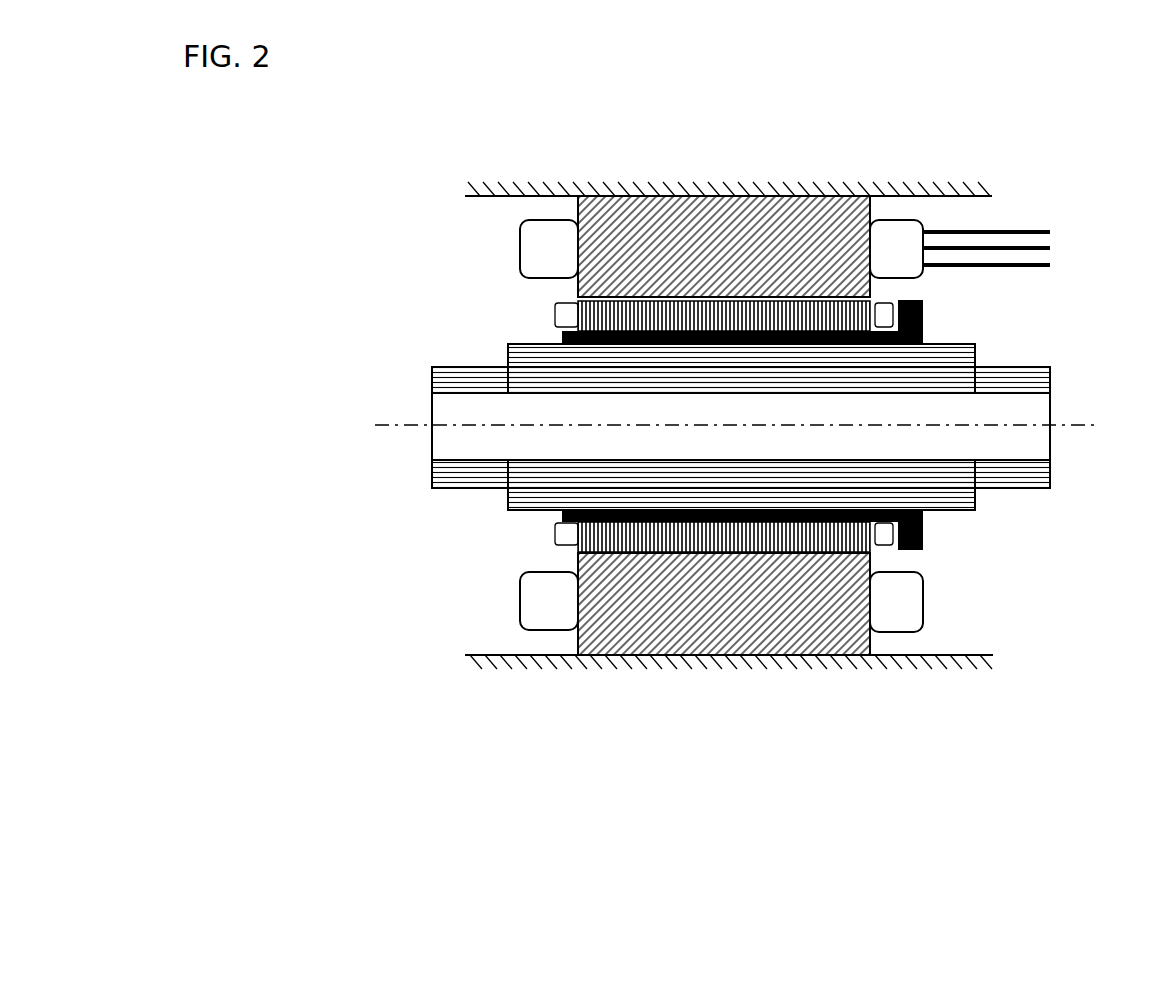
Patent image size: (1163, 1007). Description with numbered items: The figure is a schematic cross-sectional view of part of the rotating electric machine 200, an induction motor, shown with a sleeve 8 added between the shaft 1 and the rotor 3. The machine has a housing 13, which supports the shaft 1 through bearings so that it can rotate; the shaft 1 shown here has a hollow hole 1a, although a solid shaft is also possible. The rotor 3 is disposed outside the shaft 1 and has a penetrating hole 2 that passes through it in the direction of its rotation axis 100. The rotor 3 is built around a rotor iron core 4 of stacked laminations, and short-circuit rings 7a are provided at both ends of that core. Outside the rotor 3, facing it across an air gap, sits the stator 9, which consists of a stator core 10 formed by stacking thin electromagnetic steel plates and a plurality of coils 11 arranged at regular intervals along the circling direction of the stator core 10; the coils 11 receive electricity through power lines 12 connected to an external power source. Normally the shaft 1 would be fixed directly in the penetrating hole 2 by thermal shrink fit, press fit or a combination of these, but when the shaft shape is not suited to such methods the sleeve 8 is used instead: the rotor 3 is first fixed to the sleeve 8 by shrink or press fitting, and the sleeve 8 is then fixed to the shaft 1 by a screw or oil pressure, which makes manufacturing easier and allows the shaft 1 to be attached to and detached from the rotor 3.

The rotating electric machine 200 is at (889, 151).
The housing 13 is at (499, 201).
The rotor 3 is at (532, 537).
The stator core 10 is at (819, 620).
The coils 11 is at (540, 632).
The stator 9 is at (950, 612).
The rotor iron core 4 is at (720, 314).
The short-circuit rings 7a is at (568, 298).
The sleeve 8 is at (923, 532).
The power lines 12 is at (1040, 269).
The penetrating hole 2 is at (402, 345).
The shaft 1 is at (1030, 378).
The hollow hole 1a is at (1020, 447).
The rotation axis 100 is at (1070, 428).